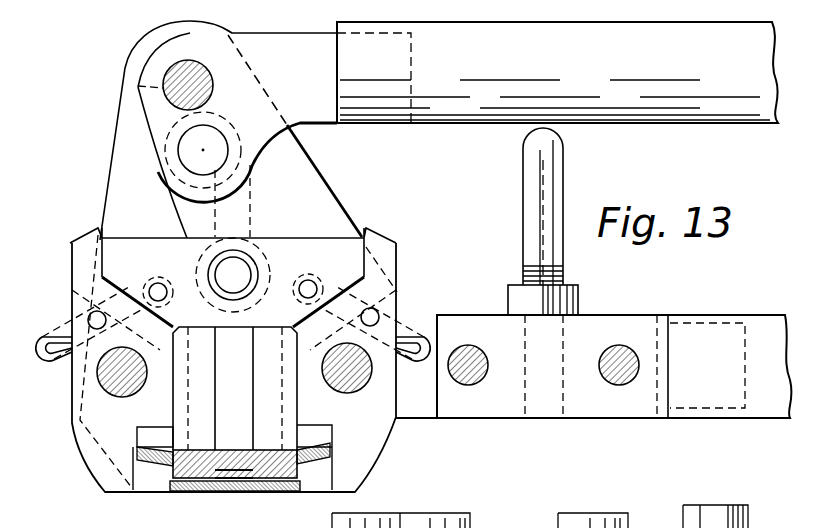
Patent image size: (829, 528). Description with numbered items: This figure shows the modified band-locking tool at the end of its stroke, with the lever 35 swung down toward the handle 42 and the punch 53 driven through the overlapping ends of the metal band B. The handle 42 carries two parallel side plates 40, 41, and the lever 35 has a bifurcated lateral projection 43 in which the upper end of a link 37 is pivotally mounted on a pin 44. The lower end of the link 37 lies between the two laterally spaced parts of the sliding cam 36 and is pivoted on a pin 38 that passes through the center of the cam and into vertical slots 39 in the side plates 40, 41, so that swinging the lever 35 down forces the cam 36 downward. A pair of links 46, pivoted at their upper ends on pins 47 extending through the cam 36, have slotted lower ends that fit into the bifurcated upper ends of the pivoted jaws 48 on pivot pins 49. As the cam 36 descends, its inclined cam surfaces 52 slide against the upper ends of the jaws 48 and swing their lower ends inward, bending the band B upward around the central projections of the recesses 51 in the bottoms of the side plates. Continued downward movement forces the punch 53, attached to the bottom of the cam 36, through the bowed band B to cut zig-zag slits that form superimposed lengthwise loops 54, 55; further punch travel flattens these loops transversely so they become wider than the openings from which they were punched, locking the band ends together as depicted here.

The lever 35 is at (400, 125).
The side plate 41 is at (108, 168).
The bifurcated lateral projection 43 is at (166, 182).
The pin 44 is at (222, 155).
The link 37 is at (262, 218).
The vertical slots 39 is at (218, 223).
The sliding cam 36 is at (143, 246).
The pin 38 is at (244, 274).
The pins 47 is at (151, 284).
The pivot pins 49 is at (89, 313).
The links 46 is at (50, 330).
The inclined cam surfaces 52 is at (155, 330).
The jaws 48 is at (76, 412).
The punch 53 is at (245, 416).
The recesses 51 is at (137, 494).
The loop 55 is at (222, 495).
The loop 54 is at (244, 493).
The metal band B is at (182, 490).
The handle 42 is at (710, 315).
The side plate 40 is at (660, 505).